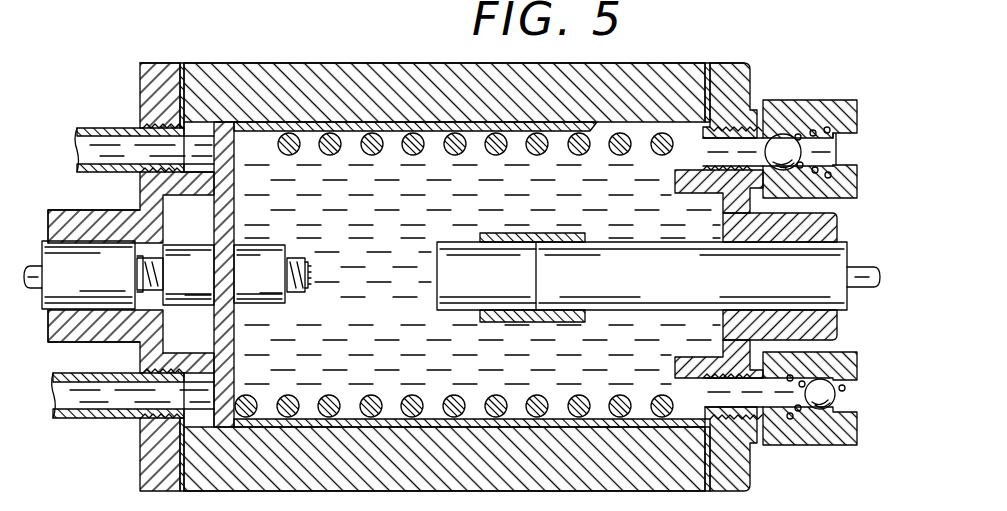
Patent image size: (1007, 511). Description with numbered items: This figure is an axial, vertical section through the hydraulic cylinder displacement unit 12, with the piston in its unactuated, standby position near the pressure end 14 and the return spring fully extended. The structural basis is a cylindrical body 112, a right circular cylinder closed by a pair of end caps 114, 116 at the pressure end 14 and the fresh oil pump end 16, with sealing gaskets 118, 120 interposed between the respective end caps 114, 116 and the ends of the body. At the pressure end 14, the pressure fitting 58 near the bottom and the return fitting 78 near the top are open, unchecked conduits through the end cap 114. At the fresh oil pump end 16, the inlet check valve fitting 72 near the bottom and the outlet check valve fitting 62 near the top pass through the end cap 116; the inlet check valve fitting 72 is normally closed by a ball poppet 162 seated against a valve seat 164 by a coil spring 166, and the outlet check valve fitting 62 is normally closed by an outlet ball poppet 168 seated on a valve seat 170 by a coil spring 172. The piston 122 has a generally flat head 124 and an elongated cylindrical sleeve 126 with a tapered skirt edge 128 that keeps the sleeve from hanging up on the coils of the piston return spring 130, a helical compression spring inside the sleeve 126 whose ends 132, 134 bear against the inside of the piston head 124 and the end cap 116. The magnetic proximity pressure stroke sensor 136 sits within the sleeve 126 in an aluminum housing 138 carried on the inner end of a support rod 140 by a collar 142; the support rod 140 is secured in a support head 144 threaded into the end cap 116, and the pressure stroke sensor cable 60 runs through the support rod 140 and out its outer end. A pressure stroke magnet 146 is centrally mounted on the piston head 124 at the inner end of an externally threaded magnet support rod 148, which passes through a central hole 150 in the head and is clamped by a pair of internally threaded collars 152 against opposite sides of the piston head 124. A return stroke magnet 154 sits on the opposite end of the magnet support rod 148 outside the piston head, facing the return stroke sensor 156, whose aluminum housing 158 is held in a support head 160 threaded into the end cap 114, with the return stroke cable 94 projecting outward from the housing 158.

The displacement unit 12 is at (646, 60).
The pressure end 14 is at (134, 74).
The fresh oil pump end 16 is at (762, 59).
The pressure fitting 58 is at (115, 420).
The pressure stroke sensor cable 60 is at (866, 282).
The outlet check valve fitting 62 is at (866, 97).
The inlet check valve fitting 72 is at (868, 447).
The return fitting 78 is at (101, 125).
The return stroke cable 94 is at (29, 262).
The cylindrical body 112 is at (424, 63).
The end cap 114 is at (155, 62).
The end cap 116 is at (744, 63).
The sealing gasket 118 is at (184, 63).
The sealing gasket 120 is at (712, 63).
The piston 122 is at (312, 119).
The piston head 124 is at (234, 178).
The piston sleeve 126 is at (386, 154).
The tapered skirt edge 128 is at (555, 153).
The piston return spring 130 is at (482, 156).
The spring end 132 is at (254, 396).
The spring end 134 is at (704, 152).
The pressure stroke sensor 136 is at (437, 278).
The aluminum housing 138 is at (467, 311).
The support rod 140 is at (656, 312).
The collar 142 is at (533, 324).
The support head 144 is at (838, 222).
The pressure stroke magnet 146 is at (308, 271).
The magnet support rod 148 is at (295, 292).
The central hole 150 is at (243, 261).
The internally threaded collars 152 is at (194, 307).
The return stroke magnet 154 is at (138, 276).
The return stroke sensor 156 is at (165, 252).
The aluminum housing 158 is at (72, 244).
The support head 160 is at (64, 333).
The ball poppet 162 is at (823, 409).
The valve seat 164 is at (835, 397).
The coil spring 166 is at (803, 420).
The outlet ball poppet 168 is at (792, 137).
The valve seat 170 is at (780, 137).
The coil spring 172 is at (822, 130).